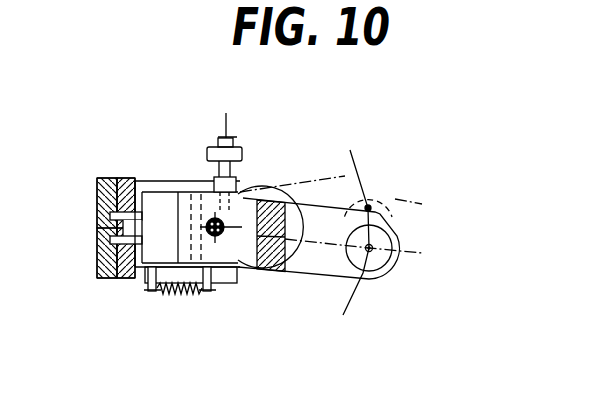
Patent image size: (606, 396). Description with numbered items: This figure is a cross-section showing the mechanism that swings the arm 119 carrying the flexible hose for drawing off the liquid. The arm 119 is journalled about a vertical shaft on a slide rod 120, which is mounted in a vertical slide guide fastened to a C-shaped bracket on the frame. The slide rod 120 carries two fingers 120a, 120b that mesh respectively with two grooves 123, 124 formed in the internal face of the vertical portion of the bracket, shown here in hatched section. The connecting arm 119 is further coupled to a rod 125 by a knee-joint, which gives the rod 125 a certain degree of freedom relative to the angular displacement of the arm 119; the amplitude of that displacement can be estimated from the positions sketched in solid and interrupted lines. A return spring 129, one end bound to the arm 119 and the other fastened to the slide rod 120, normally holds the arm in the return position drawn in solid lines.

The arm 119 is at (318, 262).
The slide rod 120 is at (165, 203).
The finger 120a is at (117, 178).
The finger 120b is at (97, 278).
The groove 123 is at (97, 211).
The groove 124 is at (97, 247).
The rod 125 is at (243, 158).
The return spring 129 is at (182, 297).